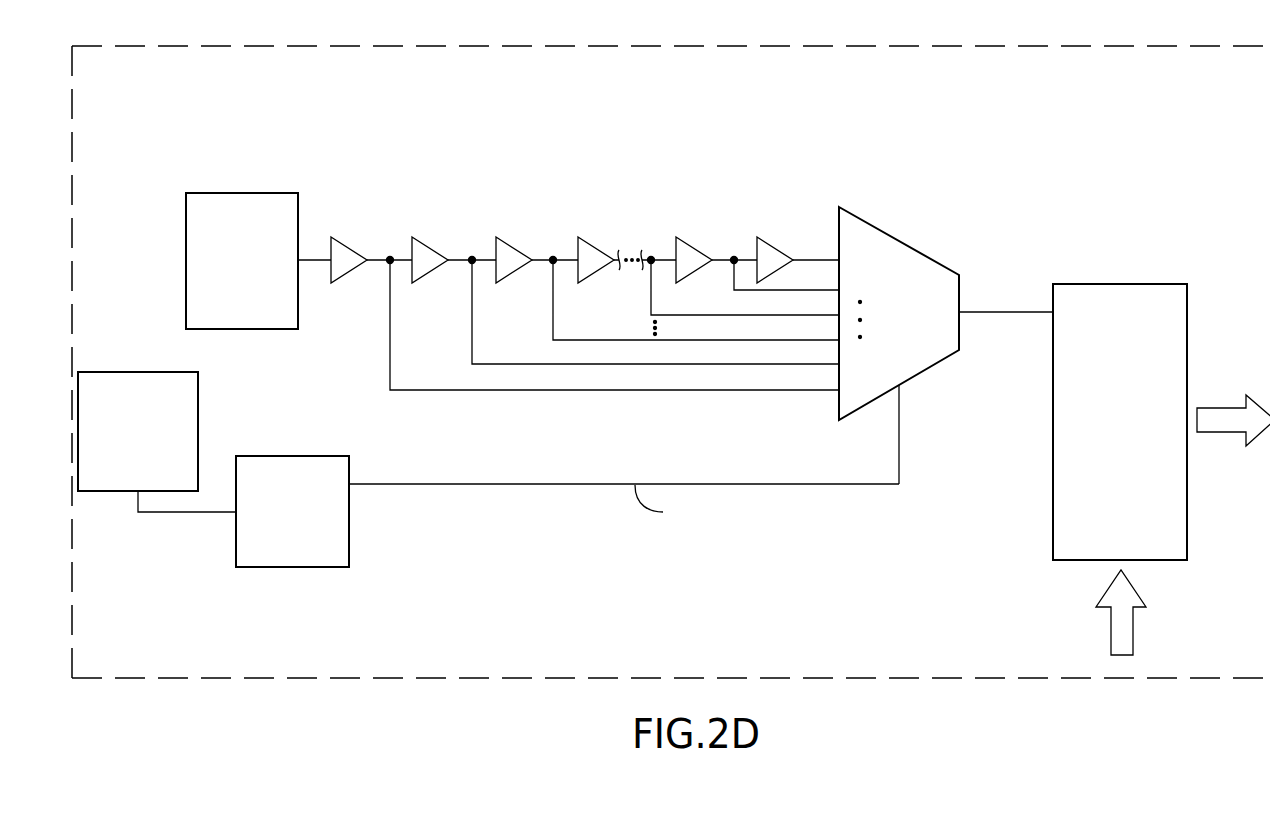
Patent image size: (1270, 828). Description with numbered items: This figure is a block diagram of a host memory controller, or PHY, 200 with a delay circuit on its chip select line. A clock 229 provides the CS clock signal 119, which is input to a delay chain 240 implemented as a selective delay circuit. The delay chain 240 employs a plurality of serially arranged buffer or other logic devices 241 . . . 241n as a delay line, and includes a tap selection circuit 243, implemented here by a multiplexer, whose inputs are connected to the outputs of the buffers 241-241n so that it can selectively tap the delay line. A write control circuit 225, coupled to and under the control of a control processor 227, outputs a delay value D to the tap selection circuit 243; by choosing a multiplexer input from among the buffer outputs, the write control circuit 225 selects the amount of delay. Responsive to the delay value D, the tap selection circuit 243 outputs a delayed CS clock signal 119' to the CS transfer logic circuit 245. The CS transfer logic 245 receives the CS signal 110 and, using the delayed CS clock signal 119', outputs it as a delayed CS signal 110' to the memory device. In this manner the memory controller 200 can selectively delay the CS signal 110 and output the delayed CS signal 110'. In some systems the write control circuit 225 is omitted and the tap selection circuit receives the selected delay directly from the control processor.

The host memory controller 200 is at (928, 77).
The clock 229 is at (216, 193).
The CS clock signal 119 is at (330, 220).
The delay chain 240 is at (585, 235).
The buffer or logic device 241 is at (353, 247).
The buffer or logic device 241n is at (765, 237).
The tap selection circuit 243 is at (880, 226).
The delayed CS clock signal 119' is at (1006, 264).
The CS transfer logic circuit 245 is at (1097, 284).
The delayed CS signal 110' is at (1233, 455).
The CS signal 110 is at (1148, 622).
The control processor 227 is at (156, 470).
The write control circuit 225 is at (258, 568).